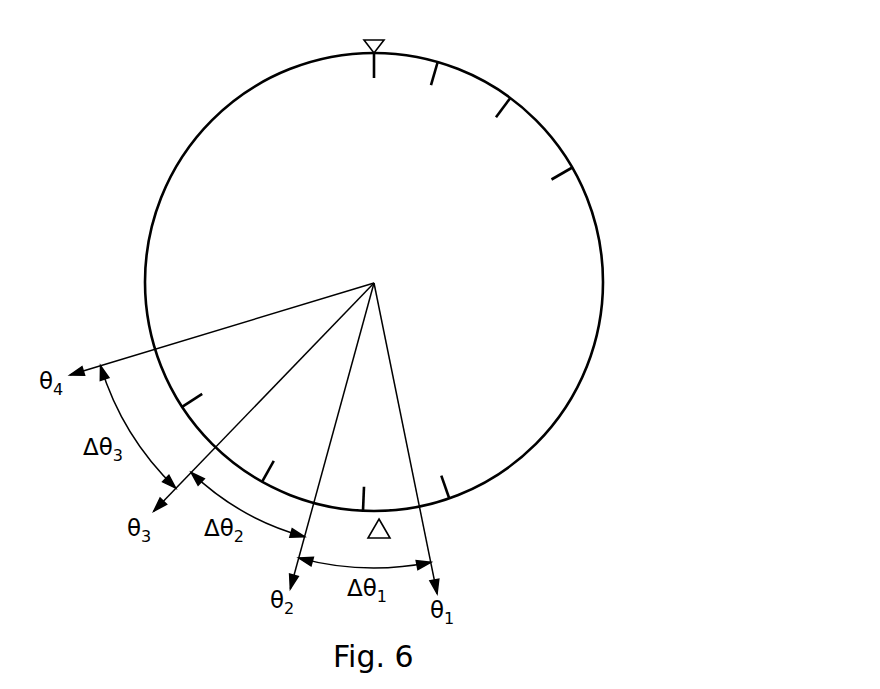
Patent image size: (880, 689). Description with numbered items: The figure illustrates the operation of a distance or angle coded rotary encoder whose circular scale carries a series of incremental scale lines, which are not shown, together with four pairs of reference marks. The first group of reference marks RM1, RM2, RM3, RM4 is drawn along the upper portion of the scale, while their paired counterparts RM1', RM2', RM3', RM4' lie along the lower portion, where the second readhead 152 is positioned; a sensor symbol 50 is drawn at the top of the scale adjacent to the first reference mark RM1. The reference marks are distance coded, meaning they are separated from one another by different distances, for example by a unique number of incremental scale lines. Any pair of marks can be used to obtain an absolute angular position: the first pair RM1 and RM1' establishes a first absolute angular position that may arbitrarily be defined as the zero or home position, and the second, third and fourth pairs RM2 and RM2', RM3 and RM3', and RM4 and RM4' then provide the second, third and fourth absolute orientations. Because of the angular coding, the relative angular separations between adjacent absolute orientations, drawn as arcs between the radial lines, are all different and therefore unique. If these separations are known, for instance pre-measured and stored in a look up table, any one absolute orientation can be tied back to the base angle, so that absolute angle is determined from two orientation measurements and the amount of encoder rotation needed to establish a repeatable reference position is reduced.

The reference sensor / index mark detector 50 is at (384, 44).
The second readhead 152 is at (392, 535).
The first reference mark RM1 is at (348, 87).
The second reference mark RM2 is at (412, 102).
The third reference mark RM3 is at (480, 136).
The fourth reference mark RM4 is at (542, 209).
The first paired reference mark RM1' is at (465, 458).
The second paired reference mark RM2' is at (368, 466).
The third paired reference mark RM3' is at (292, 442).
The fourth paired reference mark RM4' is at (224, 377).